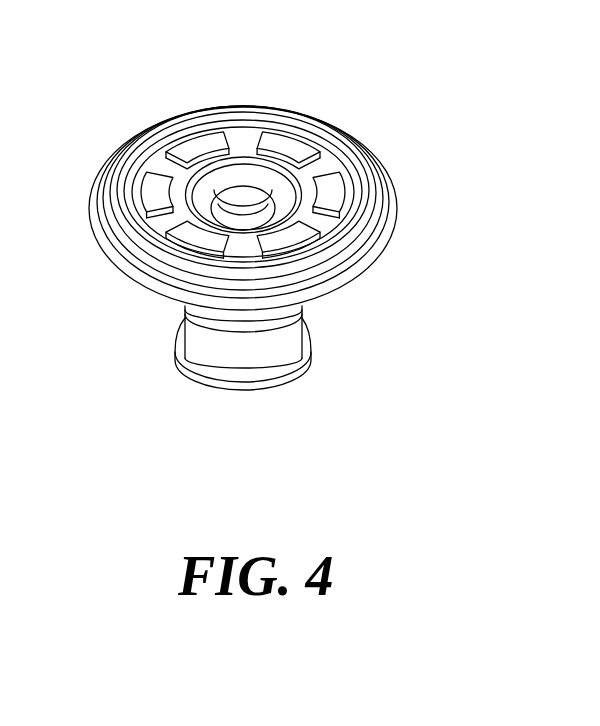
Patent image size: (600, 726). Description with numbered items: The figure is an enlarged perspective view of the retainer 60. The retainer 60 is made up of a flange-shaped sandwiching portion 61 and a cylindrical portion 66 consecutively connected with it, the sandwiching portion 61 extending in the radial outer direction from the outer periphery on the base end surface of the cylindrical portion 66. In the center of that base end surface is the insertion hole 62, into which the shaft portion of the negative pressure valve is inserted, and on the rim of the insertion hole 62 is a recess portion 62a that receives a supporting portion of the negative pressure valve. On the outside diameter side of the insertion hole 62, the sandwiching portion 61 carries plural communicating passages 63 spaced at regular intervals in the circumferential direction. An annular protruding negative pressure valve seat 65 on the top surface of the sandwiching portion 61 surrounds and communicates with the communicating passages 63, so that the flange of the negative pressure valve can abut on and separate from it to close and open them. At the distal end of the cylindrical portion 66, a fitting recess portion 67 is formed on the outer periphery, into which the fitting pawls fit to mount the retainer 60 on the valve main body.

The retainer 60 is at (319, 98).
The sandwiching portion 61 is at (397, 212).
The insertion hole 62 is at (263, 197).
The recess portion 62a is at (245, 163).
The communicating passages 63 is at (197, 140).
The negative pressure valve seat 65 is at (159, 133).
The cylindrical portion 66 is at (254, 392).
The fitting recess portion 67 is at (292, 340).